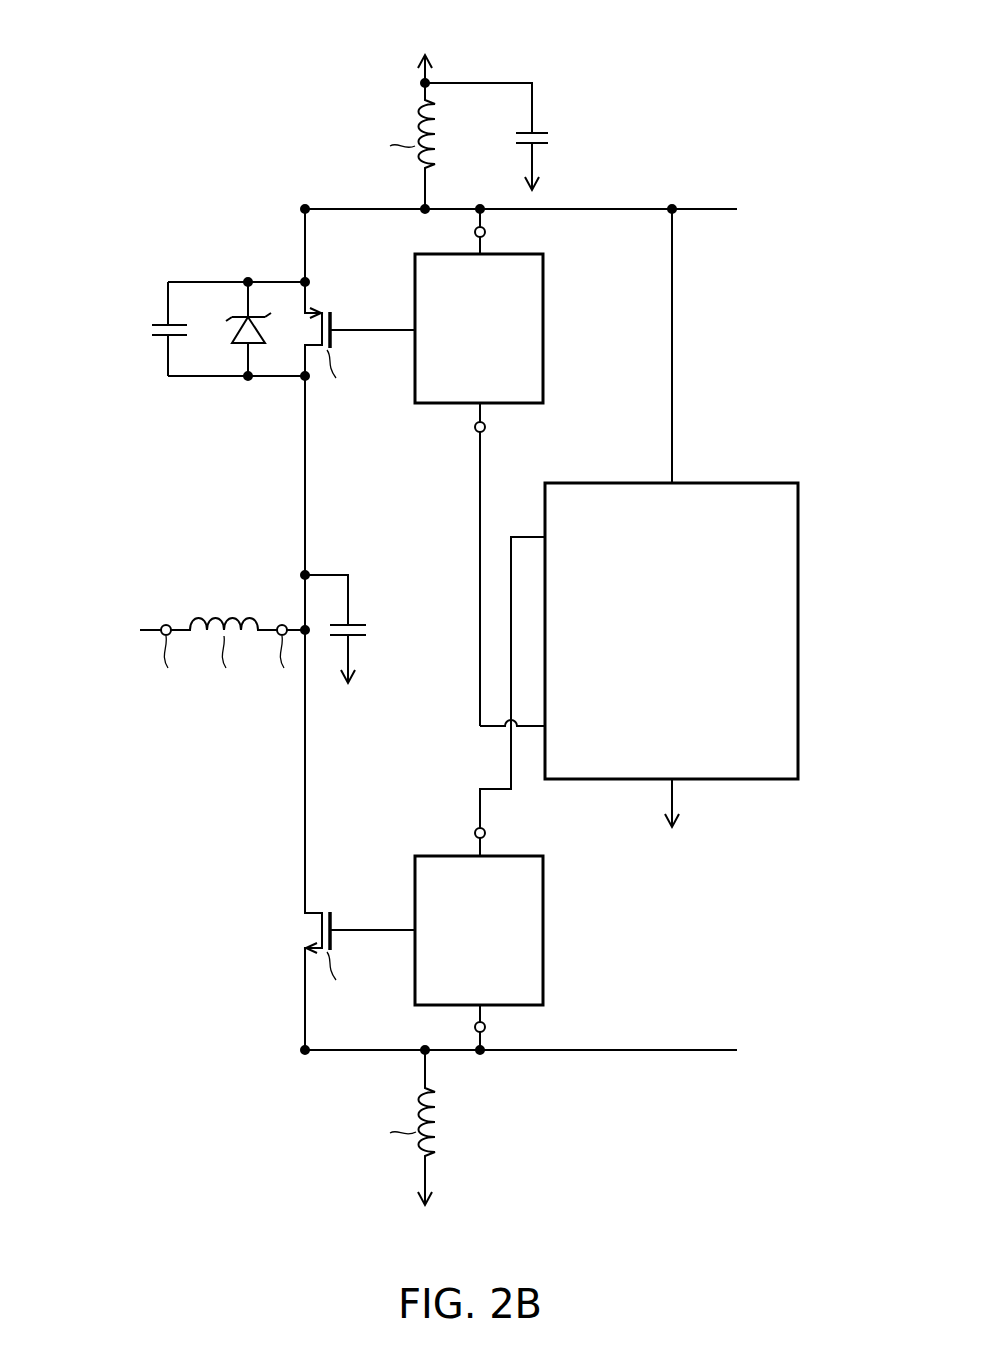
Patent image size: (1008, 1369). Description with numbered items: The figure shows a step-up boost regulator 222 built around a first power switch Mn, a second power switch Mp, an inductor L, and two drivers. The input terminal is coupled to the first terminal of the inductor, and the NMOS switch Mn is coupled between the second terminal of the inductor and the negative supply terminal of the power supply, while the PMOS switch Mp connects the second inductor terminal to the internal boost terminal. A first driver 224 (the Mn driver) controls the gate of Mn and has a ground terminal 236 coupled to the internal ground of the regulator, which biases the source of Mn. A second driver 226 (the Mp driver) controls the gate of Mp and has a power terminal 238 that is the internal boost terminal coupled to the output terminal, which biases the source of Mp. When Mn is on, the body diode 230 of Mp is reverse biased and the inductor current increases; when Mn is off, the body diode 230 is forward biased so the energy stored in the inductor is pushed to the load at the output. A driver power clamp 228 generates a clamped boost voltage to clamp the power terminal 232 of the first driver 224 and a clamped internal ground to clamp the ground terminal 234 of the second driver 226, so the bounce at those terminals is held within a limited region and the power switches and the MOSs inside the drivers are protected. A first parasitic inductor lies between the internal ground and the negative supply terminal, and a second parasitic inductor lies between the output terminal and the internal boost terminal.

The boost regulator 222 is at (155, 48).
The first driver 224 is at (512, 1005).
The second driver 226 is at (511, 254).
The driver power clamp 228 is at (546, 483).
The body diode 230 is at (238, 329).
The power terminal 232 is at (474, 834).
The ground terminal 234 is at (474, 428).
The ground terminal 236 is at (474, 1028).
The power terminal 238 is at (474, 233).